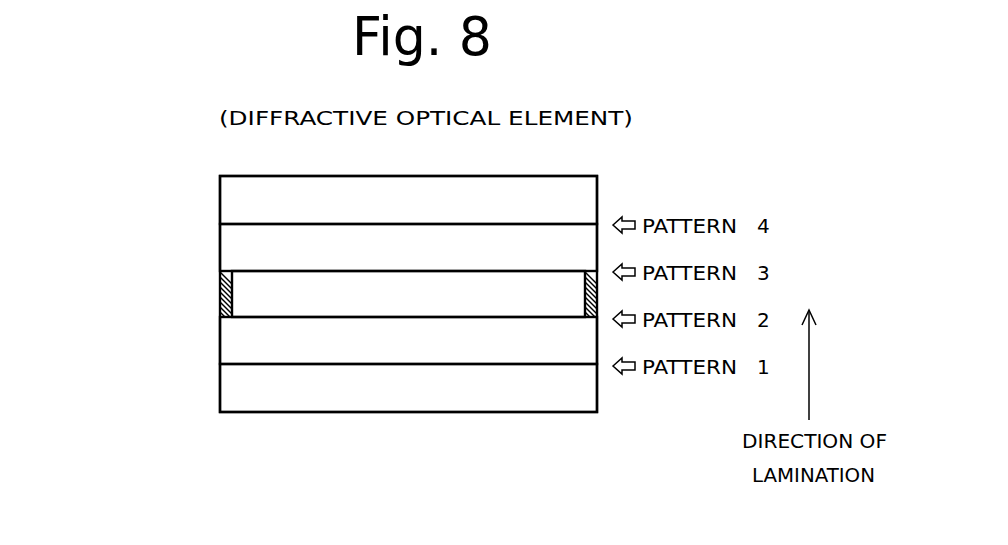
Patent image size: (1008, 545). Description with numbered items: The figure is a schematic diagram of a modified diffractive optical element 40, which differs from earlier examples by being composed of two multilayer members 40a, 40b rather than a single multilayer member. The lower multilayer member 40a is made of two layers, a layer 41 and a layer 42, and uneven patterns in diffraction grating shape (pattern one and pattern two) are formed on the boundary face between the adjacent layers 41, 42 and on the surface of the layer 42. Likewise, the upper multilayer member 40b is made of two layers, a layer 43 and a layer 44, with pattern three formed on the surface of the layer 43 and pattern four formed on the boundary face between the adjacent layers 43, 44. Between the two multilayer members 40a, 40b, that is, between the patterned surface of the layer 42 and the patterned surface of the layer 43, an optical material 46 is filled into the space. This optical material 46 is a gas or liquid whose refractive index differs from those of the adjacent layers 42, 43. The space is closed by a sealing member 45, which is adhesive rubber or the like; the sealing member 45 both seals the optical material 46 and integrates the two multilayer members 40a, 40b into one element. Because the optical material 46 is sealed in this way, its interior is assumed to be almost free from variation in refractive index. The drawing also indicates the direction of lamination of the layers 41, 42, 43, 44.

The diffractive optical element 40 is at (218, 128).
The multilayer member 40a is at (148, 322).
The multilayer member 40b is at (148, 182).
The layer 41 is at (237, 390).
The layer 42 is at (237, 343).
The layer 43 is at (237, 250).
The layer 44 is at (237, 203).
The sealing member 45 is at (220, 298).
The optical material 46 is at (421, 308).